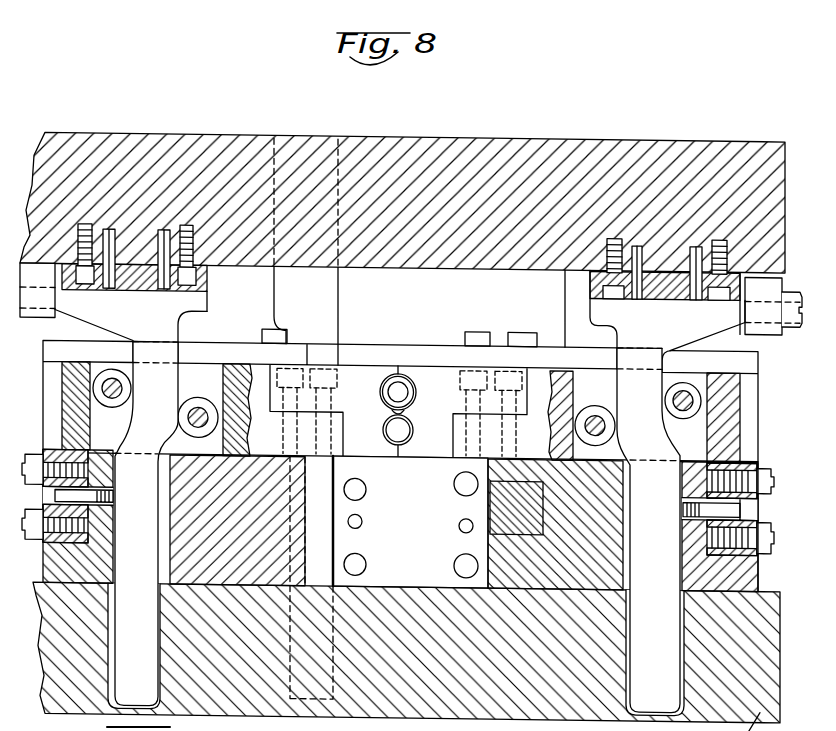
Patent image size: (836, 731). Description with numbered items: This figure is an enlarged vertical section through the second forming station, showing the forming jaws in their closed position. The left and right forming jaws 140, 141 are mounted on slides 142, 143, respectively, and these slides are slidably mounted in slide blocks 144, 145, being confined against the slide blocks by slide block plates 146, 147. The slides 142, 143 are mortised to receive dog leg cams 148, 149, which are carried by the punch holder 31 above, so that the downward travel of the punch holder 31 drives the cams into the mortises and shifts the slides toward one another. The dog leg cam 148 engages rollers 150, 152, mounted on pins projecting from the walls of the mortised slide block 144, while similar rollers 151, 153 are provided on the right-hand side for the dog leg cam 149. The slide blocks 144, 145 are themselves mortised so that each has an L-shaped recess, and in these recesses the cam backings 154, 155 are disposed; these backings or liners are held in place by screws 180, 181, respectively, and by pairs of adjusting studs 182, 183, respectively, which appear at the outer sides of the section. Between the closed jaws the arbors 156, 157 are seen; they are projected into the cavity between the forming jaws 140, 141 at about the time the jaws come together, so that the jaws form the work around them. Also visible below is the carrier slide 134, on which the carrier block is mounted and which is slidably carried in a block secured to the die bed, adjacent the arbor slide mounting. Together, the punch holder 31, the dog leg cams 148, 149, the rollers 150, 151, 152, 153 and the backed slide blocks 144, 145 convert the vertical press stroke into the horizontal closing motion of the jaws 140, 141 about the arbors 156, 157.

The punch holder 31 is at (568, 151).
The carrier slide 134 is at (490, 503).
The left forming jaw 140 is at (372, 453).
The right forming jaw 141 is at (443, 449).
The slide 142 is at (238, 368).
The slide 143 is at (566, 368).
The slide block 144 is at (287, 537).
The slide block 145 is at (513, 545).
The slide block plate 146 is at (215, 336).
The slide block plate 147 is at (738, 352).
The dog leg cam 148 is at (156, 441).
The dog leg cam 149 is at (656, 447).
The roller 150 is at (120, 402).
The roller 151 is at (605, 388).
The roller 152 is at (212, 376).
The roller 153 is at (675, 412).
The cam backing 154 is at (73, 558).
The cam backing 155 is at (747, 565).
The arbor 156 is at (400, 388).
The arbor 157 is at (406, 428).
The screw 180 is at (104, 500).
The screw 181 is at (687, 505).
The adjusting studs 182 is at (108, 461).
The adjusting studs 183 is at (773, 530).